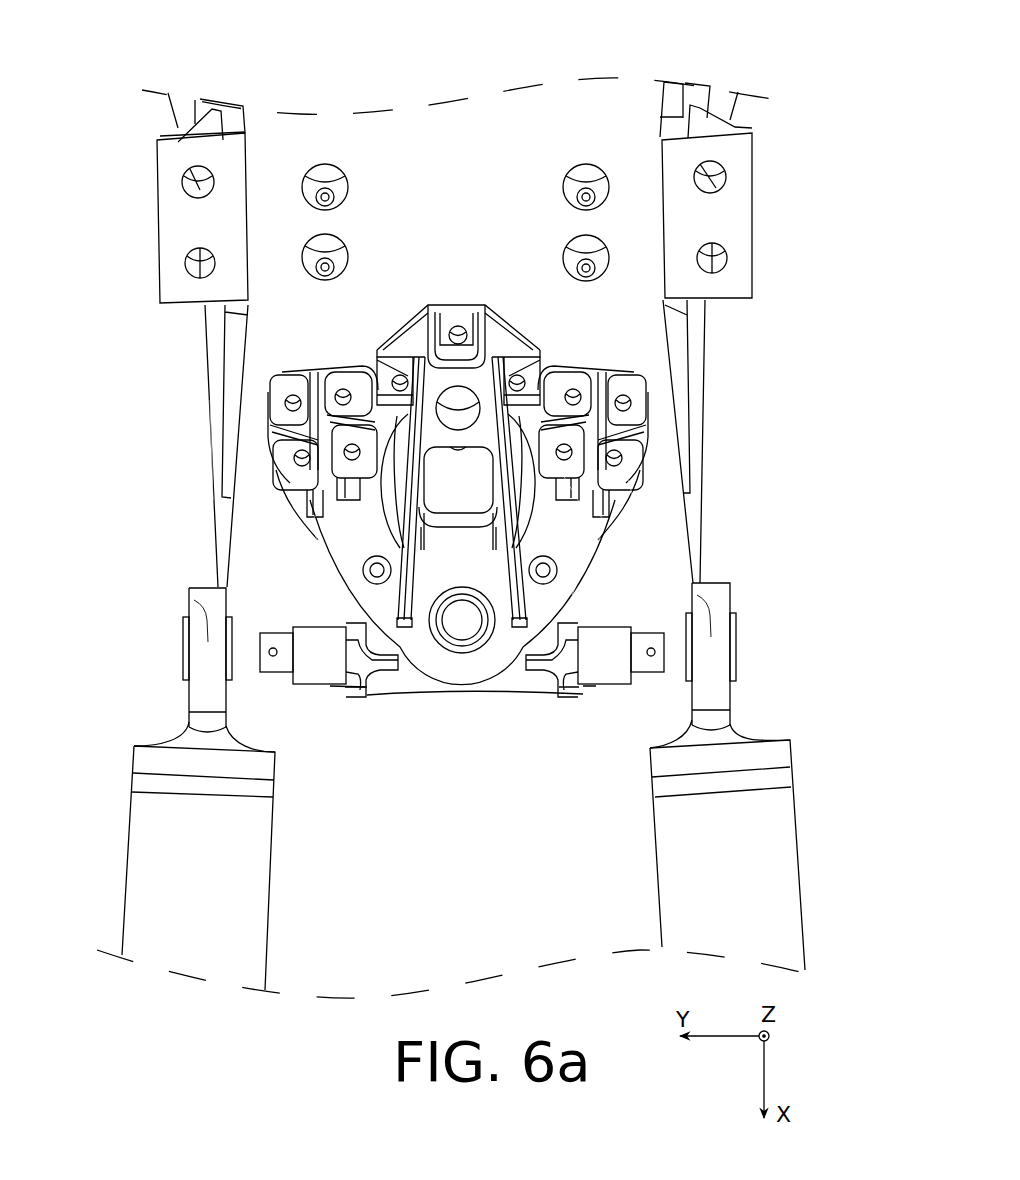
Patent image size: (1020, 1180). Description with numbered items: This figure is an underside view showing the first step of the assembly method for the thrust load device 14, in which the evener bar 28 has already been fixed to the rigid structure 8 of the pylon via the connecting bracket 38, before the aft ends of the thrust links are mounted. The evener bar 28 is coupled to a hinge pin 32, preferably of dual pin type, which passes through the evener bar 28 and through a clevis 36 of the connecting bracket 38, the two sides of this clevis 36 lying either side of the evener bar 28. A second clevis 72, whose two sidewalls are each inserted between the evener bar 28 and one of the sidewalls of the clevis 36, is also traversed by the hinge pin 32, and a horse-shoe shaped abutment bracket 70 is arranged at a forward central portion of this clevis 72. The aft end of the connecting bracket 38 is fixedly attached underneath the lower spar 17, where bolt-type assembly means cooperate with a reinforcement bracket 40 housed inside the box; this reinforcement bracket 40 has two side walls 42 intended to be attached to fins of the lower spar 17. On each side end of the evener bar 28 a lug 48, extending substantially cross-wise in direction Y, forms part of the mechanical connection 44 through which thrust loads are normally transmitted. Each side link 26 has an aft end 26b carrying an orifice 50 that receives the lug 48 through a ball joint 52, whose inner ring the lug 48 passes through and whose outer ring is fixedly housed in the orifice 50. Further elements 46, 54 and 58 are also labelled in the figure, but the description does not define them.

The rigid structure 8 is at (427, 106).
The thrust load device 14 is at (91, 279).
The lower spar 17 is at (665, 215).
The side walls 42 is at (680, 331).
The reinforcement bracket 40 is at (692, 353).
The connecting bracket 38 is at (456, 560).
The abutment bracket 70 is at (272, 447).
The clevis 72 is at (335, 594).
The connecting unit 46 is at (822, 420).
The connecting element 58 is at (578, 553).
The connecting element 54 is at (716, 550).
The mechanical connection 44 is at (461, 612).
The orifice 50 is at (183, 596).
The ball joint 52 is at (183, 648).
The aft end 26b is at (143, 709).
The side link 26 is at (123, 884).
The lug 48 is at (325, 668).
The hinge pin 32 is at (455, 650).
The clevis 36 is at (462, 688).
The evener bar 28 is at (524, 699).